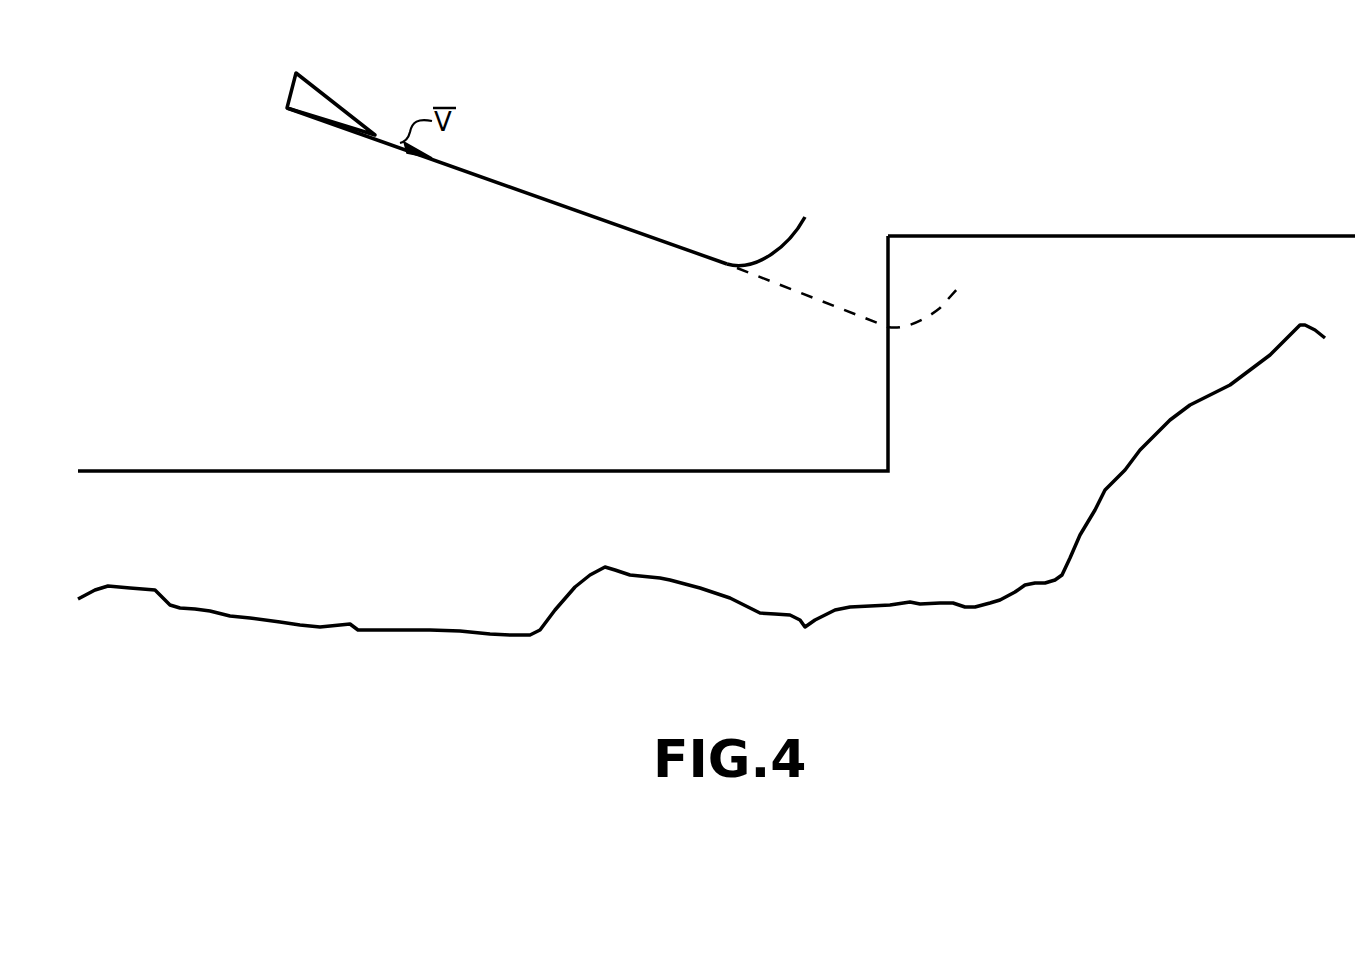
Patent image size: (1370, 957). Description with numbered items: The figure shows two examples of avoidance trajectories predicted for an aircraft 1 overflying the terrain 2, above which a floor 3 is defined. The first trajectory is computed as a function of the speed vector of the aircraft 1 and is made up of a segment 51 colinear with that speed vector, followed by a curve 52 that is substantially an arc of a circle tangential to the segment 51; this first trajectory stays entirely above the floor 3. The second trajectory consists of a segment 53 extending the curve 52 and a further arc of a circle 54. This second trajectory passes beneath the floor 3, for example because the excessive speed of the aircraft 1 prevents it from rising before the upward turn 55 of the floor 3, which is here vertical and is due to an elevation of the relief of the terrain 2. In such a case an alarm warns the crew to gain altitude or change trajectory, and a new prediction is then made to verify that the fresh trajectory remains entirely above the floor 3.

The aircraft 1 is at (318, 108).
The terrain 2 is at (1153, 438).
The floor 3 is at (970, 236).
The segment 51 is at (560, 204).
The arc of a circle 52 is at (776, 260).
The segment 53 is at (811, 297).
The arc of a circle 54 is at (936, 306).
The upward turn 55 is at (890, 421).